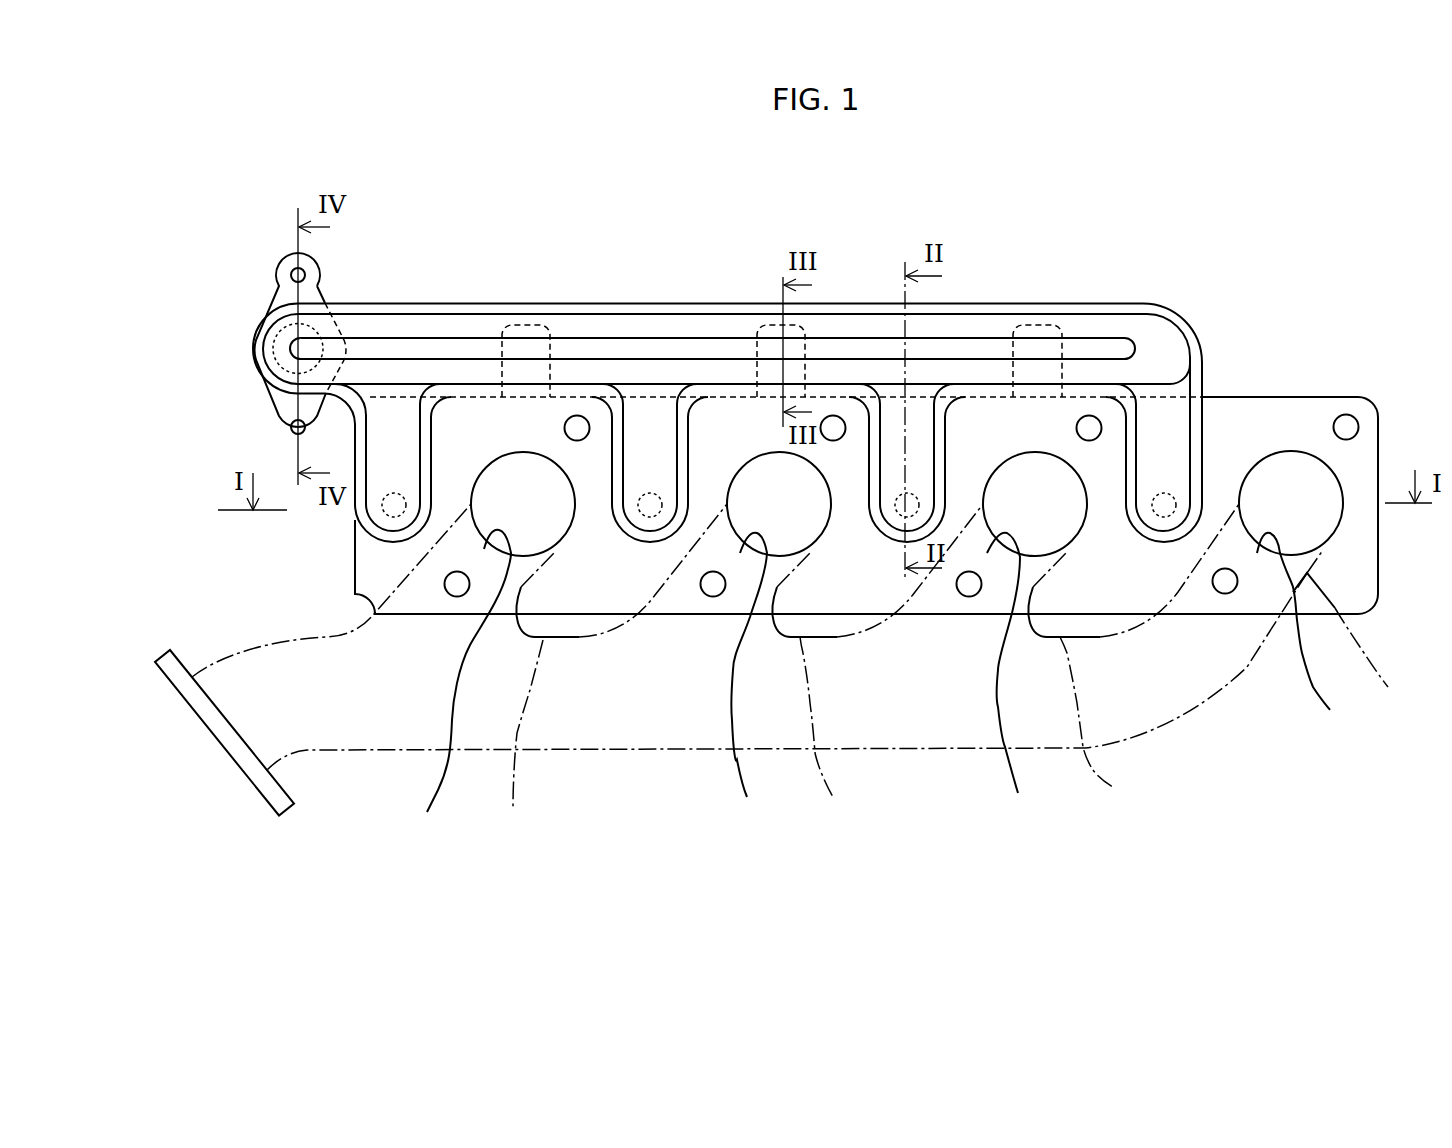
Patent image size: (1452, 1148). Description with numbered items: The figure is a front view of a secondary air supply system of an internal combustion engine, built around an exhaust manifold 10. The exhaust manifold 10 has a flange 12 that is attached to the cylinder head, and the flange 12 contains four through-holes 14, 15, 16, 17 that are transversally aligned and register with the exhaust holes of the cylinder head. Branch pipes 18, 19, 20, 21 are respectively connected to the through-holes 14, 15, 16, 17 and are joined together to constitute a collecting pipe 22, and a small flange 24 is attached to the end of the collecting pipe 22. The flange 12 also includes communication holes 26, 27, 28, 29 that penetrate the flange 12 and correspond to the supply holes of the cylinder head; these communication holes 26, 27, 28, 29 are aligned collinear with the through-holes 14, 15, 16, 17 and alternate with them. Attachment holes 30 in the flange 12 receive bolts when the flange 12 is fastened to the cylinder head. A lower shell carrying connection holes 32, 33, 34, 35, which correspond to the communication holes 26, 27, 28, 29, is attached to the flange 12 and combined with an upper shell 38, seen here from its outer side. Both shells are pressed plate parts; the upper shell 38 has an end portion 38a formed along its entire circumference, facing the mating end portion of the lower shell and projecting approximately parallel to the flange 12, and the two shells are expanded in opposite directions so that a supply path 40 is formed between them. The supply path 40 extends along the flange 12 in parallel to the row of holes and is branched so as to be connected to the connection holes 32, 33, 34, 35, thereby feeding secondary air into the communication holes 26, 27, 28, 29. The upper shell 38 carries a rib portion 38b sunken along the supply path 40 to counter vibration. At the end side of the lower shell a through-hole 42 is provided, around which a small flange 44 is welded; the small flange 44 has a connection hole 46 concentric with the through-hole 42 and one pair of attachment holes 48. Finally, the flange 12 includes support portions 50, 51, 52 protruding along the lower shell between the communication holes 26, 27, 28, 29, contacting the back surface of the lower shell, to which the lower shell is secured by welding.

The exhaust manifold 10 is at (605, 757).
The flange 12 is at (1267, 412).
The through-hole 14 is at (1303, 641).
The through-hole 15 is at (1015, 681).
The through-hole 16 is at (750, 684).
The through-hole 17 is at (463, 689).
The branch pipe 18 is at (1377, 667).
The branch pipe 19 is at (1101, 731).
The branch pipe 20 is at (827, 735).
The branch pipe 21 is at (521, 741).
The collecting pipe 22 is at (362, 692).
The small flange 24 is at (185, 666).
The communication hole 26 is at (1204, 463).
The communication hole 27 is at (925, 463).
The communication hole 28 is at (666, 463).
The communication hole 29 is at (434, 463).
The attachment hole 30 is at (1347, 416).
The connection hole 32 is at (1173, 496).
The connection hole 33 is at (916, 496).
The connection hole 34 is at (659, 496).
The connection hole 35 is at (402, 496).
The upper shell 38 is at (727, 372).
The end portion 38a is at (958, 306).
The rib portion 38b is at (662, 343).
The supply path 40 is at (1155, 353).
The through-hole 42 is at (231, 349).
The small flange 44 is at (296, 318).
The connection hole 46 is at (231, 333).
The attachment hole 48 is at (290, 275).
The support portion 50 is at (1064, 327).
The support portion 51 is at (806, 323).
The support portion 52 is at (542, 325).